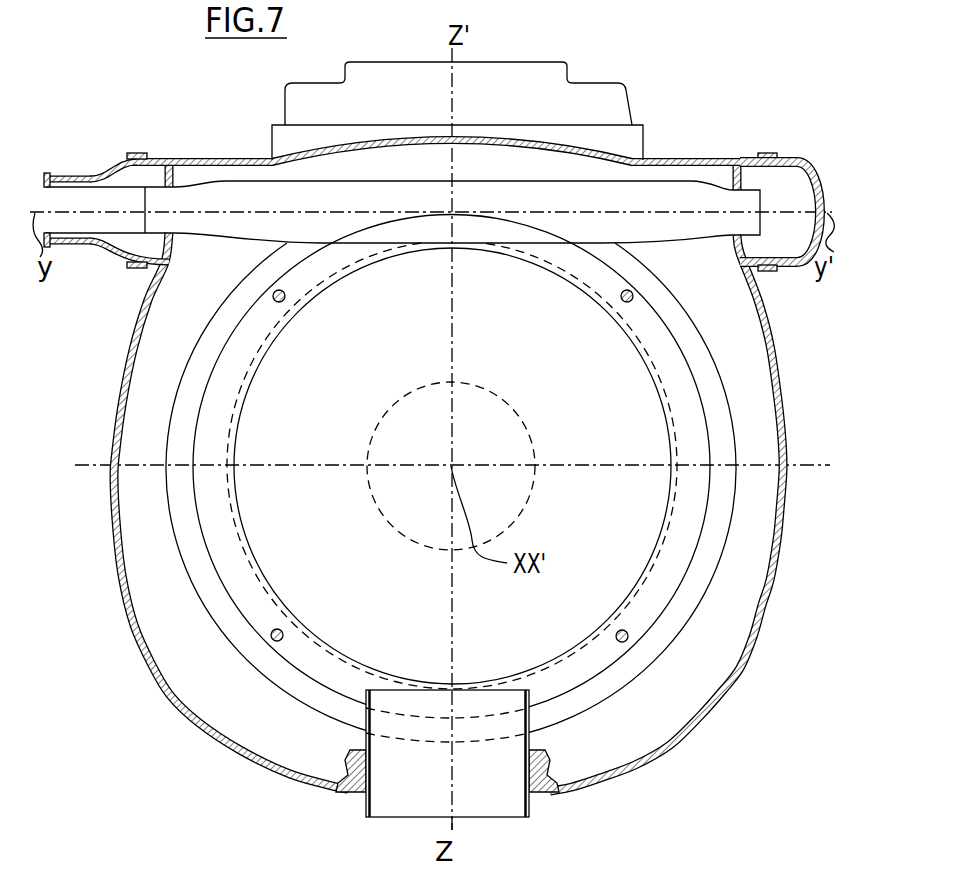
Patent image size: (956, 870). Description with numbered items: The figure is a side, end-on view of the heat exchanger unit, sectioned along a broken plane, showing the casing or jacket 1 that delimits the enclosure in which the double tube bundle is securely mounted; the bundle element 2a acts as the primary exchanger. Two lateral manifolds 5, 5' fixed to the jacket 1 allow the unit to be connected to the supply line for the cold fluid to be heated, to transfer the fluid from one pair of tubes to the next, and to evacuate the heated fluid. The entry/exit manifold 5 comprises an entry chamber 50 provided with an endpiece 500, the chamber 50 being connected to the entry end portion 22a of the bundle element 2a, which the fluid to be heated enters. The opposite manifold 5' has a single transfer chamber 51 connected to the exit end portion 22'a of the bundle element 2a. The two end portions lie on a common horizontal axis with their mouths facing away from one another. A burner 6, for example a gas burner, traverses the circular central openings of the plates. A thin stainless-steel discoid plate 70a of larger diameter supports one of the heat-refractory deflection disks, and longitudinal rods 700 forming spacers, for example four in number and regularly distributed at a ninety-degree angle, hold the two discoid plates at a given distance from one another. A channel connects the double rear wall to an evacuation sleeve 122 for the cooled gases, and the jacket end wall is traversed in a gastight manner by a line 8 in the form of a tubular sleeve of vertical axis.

The casing or jacket 1 is at (705, 722).
The tube bundle element acting as primary exchanger 2a is at (745, 386).
The entry/exit manifold 5 is at (106, 201).
The opposite manifold 5' is at (782, 169).
The burner 6 is at (505, 397).
The line 8 is at (502, 797).
The entry end portion of bundle element 2a 22a is at (217, 203).
The exit end portion of bundle element 2a 22'a is at (606, 166).
The entry chamber 50 is at (128, 155).
The transfer chamber 51 is at (807, 175).
The discoid frame plate 70a is at (687, 517).
The evacuation sleeve 122 is at (553, 80).
The endpiece 500 is at (76, 173).
The longitudinal rods 700 is at (632, 298).